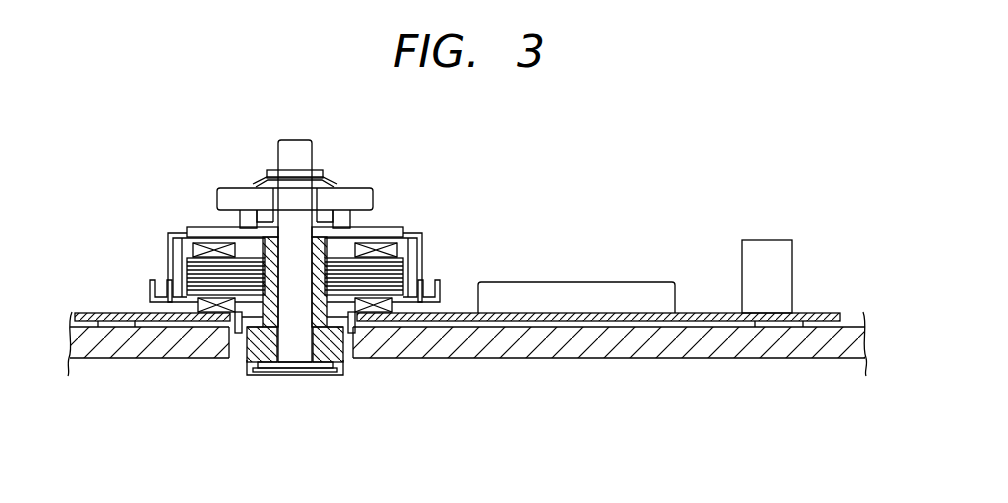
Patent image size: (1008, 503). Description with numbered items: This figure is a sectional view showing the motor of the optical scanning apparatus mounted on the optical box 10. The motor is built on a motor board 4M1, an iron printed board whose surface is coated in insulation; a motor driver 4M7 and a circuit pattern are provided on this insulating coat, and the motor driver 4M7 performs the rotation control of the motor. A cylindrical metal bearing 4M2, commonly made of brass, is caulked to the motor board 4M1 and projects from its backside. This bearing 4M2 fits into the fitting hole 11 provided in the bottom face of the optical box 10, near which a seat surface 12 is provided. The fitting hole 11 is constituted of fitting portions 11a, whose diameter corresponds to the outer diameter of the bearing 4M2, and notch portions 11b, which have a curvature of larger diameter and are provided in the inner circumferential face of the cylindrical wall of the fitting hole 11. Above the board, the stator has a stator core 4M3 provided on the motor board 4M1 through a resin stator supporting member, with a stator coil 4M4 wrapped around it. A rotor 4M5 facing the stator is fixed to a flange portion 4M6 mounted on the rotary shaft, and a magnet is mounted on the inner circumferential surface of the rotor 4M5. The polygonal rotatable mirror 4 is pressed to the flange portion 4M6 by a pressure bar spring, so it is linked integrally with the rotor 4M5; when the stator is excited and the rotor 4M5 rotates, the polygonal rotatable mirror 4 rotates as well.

The polygonal rotatable mirror 4 is at (227, 198).
The motor board 4M1 is at (705, 312).
The bearing 4M2 is at (335, 326).
The stator core 4M3 is at (187, 270).
The stator coil 4M4 is at (183, 250).
The rotor 4M5 is at (422, 263).
The flange portion 4M6 is at (352, 218).
The motor driver 4M7 is at (572, 287).
The optical box 10 is at (815, 347).
The fitting hole 11 is at (305, 363).
The fitting portions 11a is at (350, 341).
The notch portions 11b is at (240, 353).
The seat surface 12 is at (118, 323).